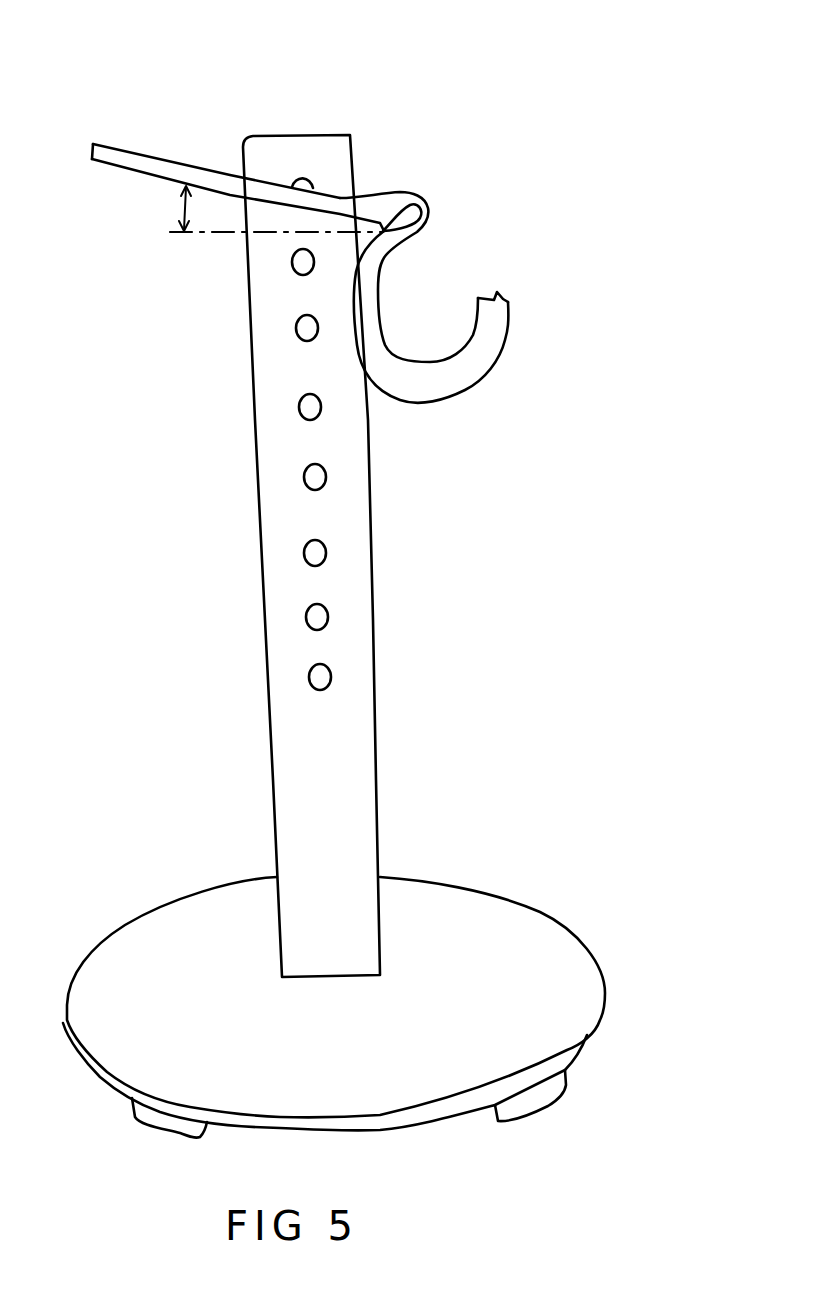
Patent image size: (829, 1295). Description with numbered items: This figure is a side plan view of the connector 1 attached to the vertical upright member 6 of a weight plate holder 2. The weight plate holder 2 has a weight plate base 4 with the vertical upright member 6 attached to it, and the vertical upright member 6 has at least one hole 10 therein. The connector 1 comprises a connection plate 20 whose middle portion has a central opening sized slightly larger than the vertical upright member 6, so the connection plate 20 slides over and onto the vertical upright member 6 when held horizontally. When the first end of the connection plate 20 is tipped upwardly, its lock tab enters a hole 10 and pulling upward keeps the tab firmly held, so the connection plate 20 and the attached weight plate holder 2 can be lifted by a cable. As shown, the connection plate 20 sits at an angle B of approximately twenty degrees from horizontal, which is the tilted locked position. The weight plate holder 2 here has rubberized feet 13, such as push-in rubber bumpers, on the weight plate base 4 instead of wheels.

The connector 1 is at (151, 154).
The connection plate 20 is at (227, 183).
The angle B is at (178, 200).
The vertical upright member 6 is at (347, 753).
The hole 10 is at (323, 473).
The weight plate base 4 is at (500, 922).
The weight plate holder 2 is at (597, 953).
The rubberized feet 13 is at (135, 1116).